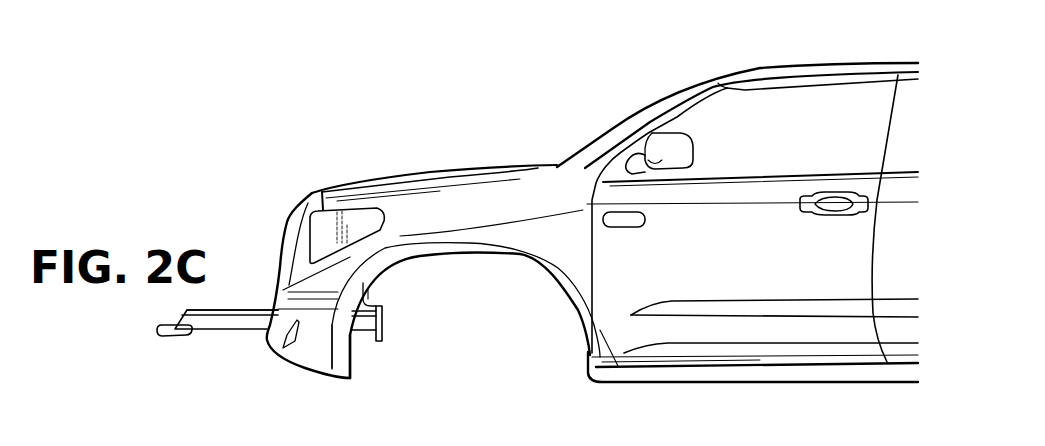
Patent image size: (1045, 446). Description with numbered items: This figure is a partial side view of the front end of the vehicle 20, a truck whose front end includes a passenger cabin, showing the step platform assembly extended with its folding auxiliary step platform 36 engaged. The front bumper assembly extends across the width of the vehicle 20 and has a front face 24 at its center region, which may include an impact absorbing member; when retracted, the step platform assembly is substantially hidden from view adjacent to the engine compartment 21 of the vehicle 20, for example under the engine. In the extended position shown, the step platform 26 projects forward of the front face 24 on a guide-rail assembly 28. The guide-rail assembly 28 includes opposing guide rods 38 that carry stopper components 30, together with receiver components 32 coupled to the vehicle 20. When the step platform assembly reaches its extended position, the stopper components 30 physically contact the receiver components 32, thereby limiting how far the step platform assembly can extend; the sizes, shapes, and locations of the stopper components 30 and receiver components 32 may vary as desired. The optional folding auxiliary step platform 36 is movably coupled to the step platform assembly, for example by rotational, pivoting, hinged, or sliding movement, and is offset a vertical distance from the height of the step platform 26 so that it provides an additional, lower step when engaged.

The vehicle 20 is at (612, 130).
The engine compartment 21 is at (476, 275).
The front face 24 is at (172, 336).
The step platform 26 is at (237, 310).
The guide-rail assembly 28 is at (365, 340).
The stopper component 30 is at (385, 324).
The receiver component 32 is at (397, 236).
The folding auxiliary step platform 36 is at (168, 326).
The guide rod 38 is at (251, 329).